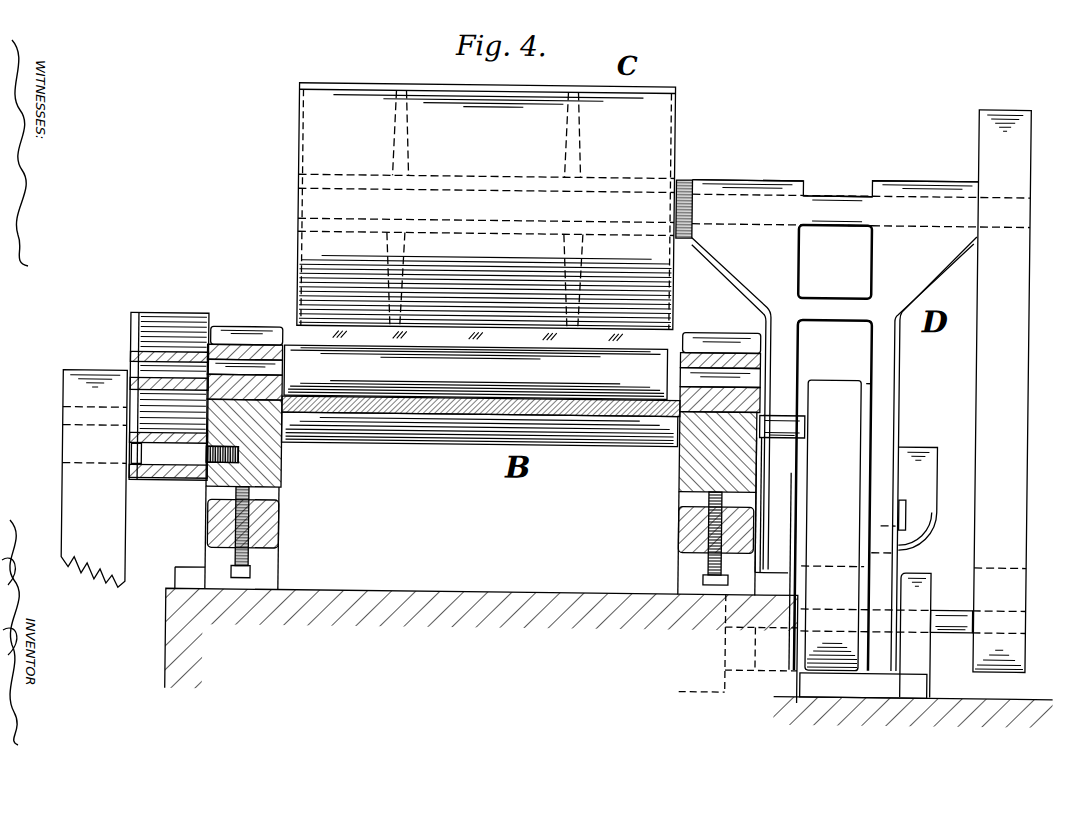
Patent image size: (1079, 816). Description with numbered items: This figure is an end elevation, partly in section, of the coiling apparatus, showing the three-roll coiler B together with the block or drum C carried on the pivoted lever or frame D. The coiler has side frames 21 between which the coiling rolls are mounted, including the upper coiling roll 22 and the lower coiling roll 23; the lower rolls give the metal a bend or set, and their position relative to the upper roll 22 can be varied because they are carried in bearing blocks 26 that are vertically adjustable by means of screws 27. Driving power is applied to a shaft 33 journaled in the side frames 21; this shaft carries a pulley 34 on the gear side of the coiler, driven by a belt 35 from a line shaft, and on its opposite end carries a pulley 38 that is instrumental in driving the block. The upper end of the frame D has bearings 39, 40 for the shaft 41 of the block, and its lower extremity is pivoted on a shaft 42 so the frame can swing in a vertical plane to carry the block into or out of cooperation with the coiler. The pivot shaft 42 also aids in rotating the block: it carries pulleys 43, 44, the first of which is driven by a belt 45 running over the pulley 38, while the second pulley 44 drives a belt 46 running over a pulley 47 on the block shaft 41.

The side frames 21 is at (281, 526).
The upper coiling roll 22 is at (315, 361).
The lower coiling roll 23 is at (613, 446).
The bearing blocks 26 is at (282, 479).
The screws 27 is at (252, 561).
The shaft 33 is at (772, 412).
The pulley 34 is at (126, 468).
The belt 35 is at (76, 493).
The pulley 38 is at (860, 446).
The bearing 39 is at (755, 185).
The bearing 40 is at (902, 188).
The shaft of the block 41 is at (841, 214).
The pivot shaft 42 is at (944, 610).
The pulley 43 is at (812, 564).
The pulley 44 is at (995, 563).
The belt 45 is at (848, 494).
The belt 46 is at (1012, 385).
The pulley 47 is at (976, 312).